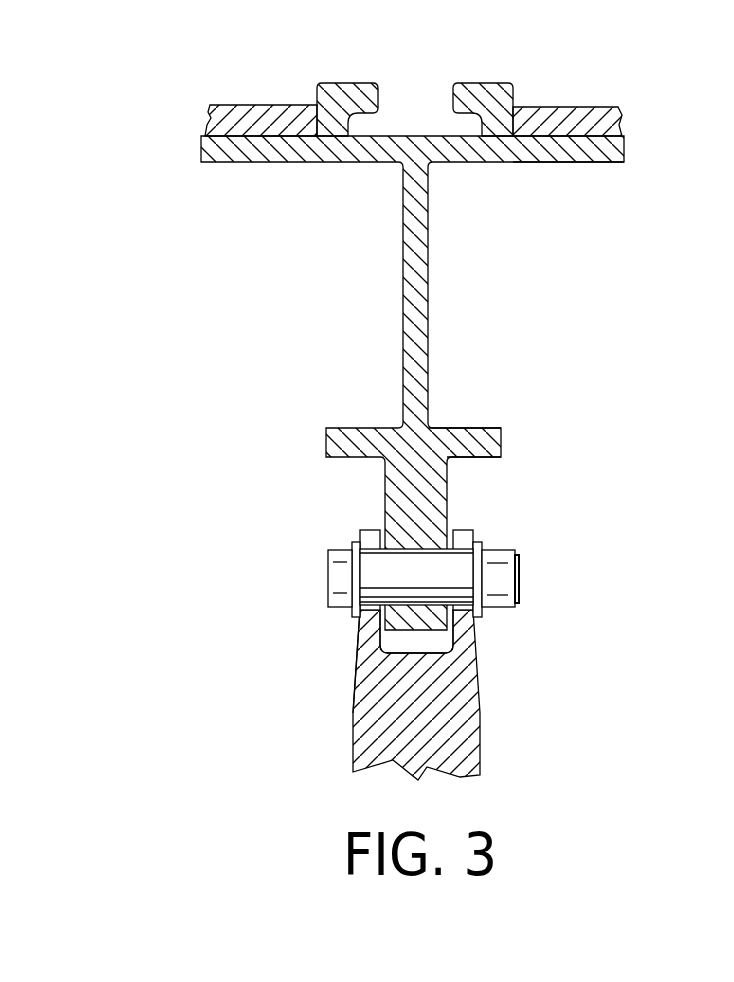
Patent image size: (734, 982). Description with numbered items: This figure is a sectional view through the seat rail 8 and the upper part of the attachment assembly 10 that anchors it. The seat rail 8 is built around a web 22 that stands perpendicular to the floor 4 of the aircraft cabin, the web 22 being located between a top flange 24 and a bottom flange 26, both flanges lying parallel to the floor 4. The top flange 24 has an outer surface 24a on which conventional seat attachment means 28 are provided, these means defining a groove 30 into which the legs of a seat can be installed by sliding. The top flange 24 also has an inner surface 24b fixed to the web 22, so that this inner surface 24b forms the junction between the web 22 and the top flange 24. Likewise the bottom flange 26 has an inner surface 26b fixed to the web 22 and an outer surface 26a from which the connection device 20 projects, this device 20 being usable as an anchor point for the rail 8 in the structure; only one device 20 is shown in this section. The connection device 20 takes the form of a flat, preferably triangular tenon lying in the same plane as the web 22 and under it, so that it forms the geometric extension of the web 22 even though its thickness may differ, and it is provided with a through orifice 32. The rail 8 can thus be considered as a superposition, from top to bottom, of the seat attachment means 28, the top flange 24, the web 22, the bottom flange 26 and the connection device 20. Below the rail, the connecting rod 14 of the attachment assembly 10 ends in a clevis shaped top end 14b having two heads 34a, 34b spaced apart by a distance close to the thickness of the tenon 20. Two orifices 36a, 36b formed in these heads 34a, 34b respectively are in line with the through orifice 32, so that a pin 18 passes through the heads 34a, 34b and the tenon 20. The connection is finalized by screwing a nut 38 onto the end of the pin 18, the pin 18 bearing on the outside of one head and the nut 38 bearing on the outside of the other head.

The floor 4 is at (242, 108).
The seat rail 8 is at (413, 318).
The attachment assembly 10 is at (434, 643).
The connecting rod 14 is at (368, 748).
The clevis shaped top end 14b is at (366, 677).
The pin 18 is at (328, 585).
The connection device 20 is at (392, 500).
The web 22 is at (418, 256).
The top flange 24 is at (615, 150).
The outer surface of the top flange 24a is at (585, 135).
The inner surface of the top flange 24b is at (586, 164).
The bottom flange 26 is at (493, 438).
The outer surface of the bottom flange 26a is at (490, 458).
The inner surface of the bottom flange 26b is at (484, 428).
The seat attachment means 28 is at (344, 74).
The groove 30 is at (467, 122).
The through orifice 32 is at (418, 540).
The head 34a is at (364, 537).
The head 34b is at (462, 537).
The orifice 36a is at (470, 578).
The orifice 36b is at (370, 556).
The nut 38 is at (498, 603).